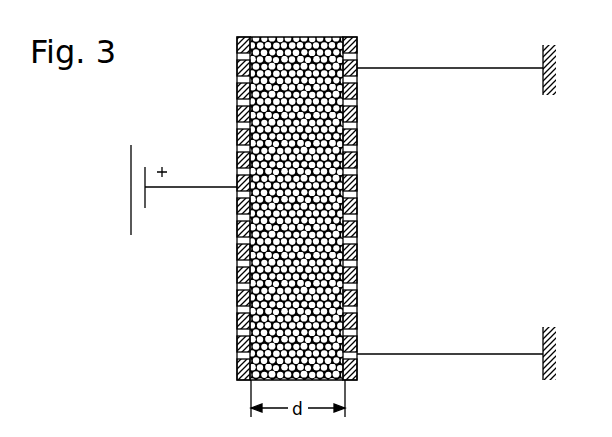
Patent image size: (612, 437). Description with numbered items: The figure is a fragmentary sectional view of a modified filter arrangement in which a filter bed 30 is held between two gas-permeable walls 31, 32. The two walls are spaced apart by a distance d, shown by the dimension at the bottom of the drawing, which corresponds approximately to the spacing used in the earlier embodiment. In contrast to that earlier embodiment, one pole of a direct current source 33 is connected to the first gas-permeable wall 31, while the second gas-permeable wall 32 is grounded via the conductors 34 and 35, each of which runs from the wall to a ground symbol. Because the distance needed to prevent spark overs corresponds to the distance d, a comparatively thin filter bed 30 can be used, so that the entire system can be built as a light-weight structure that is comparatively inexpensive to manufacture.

The filter bed 30 is at (237, 268).
The gas-permeable wall 31 is at (237, 85).
The gas-permeable wall 32 is at (357, 178).
The direct current source 33 is at (131, 178).
The conductor 34 is at (456, 68).
The conductor 35 is at (431, 354).